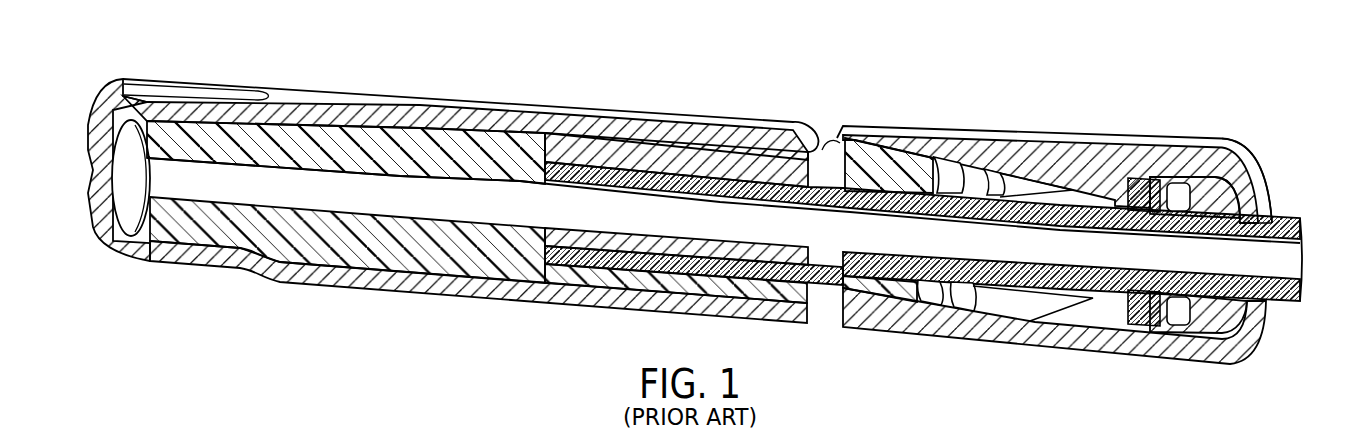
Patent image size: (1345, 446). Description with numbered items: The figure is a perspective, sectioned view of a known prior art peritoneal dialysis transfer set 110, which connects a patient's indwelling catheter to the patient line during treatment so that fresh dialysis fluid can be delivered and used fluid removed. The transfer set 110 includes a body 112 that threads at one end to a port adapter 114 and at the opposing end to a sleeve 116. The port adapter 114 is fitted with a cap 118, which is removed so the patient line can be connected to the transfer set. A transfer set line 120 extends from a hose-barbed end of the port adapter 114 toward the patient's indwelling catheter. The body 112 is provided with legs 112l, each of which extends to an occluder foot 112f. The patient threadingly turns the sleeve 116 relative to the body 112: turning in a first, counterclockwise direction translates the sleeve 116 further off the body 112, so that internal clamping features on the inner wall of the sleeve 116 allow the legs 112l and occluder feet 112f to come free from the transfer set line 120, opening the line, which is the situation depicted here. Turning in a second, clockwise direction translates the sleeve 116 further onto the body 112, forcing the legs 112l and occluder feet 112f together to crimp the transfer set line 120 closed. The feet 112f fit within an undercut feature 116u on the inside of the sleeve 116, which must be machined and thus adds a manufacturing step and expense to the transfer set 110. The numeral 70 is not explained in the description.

The transfer set 110 is at (455, 66).
The body 112 is at (570, 136).
The legs 112l is at (1073, 192).
The occluder foot 112f is at (1138, 195).
The port adapter 114 is at (417, 268).
The sleeve 116 is at (1003, 150).
The undercut feature 116u is at (1165, 185).
The cap 118 is at (288, 108).
The transfer set line 120 is at (1292, 303).
The cable 70 is at (1256, 206).